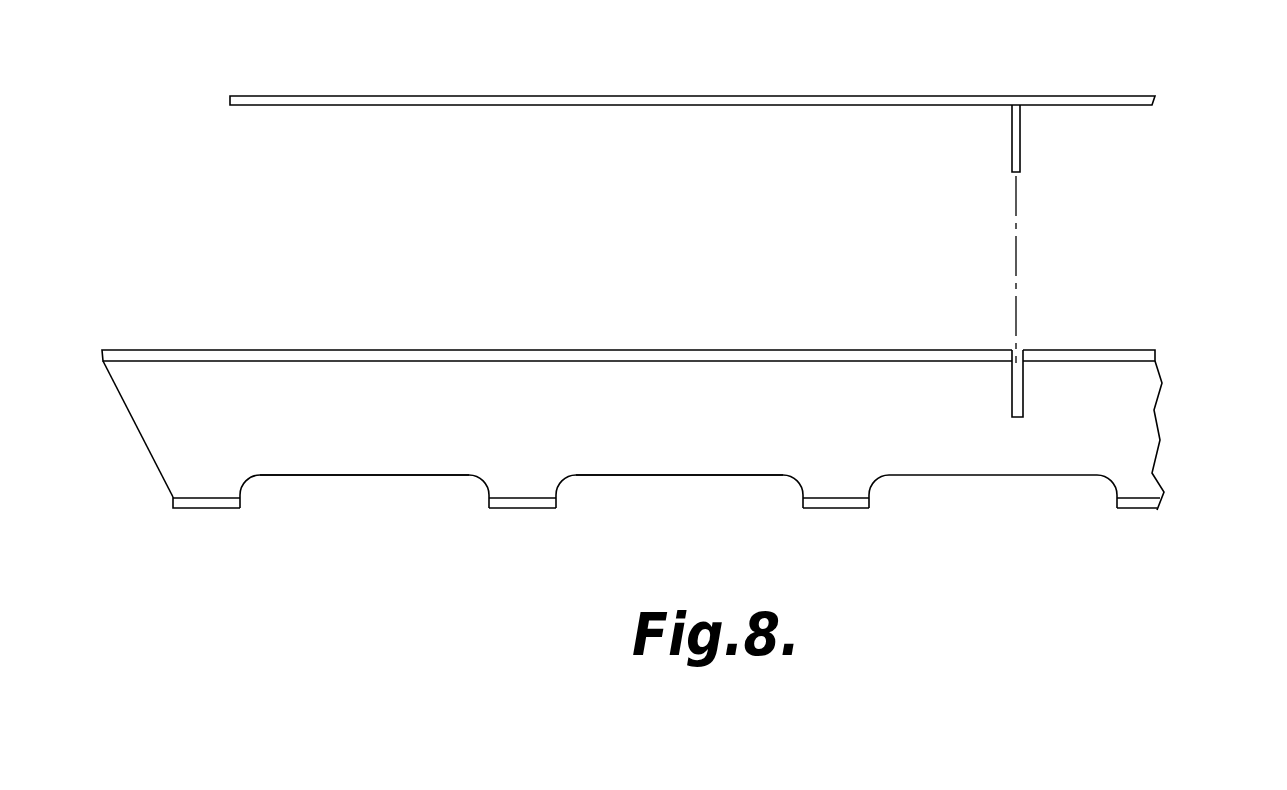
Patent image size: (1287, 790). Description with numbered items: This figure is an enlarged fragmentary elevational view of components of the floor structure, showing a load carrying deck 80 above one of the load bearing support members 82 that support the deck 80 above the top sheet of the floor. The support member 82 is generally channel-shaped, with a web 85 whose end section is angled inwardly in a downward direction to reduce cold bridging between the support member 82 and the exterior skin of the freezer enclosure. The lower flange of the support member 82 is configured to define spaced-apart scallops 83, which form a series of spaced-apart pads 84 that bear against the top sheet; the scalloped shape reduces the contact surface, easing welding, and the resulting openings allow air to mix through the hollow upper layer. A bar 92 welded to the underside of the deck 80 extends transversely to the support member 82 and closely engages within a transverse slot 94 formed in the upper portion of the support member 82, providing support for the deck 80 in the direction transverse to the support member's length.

The load carrying deck 80 is at (1080, 97).
The load bearing support member 82 is at (1167, 413).
The scallop 83 is at (370, 492).
The pad 84 is at (205, 505).
The web 85 is at (645, 420).
The bar 92 is at (1021, 146).
The transverse slot 94 is at (1022, 383).